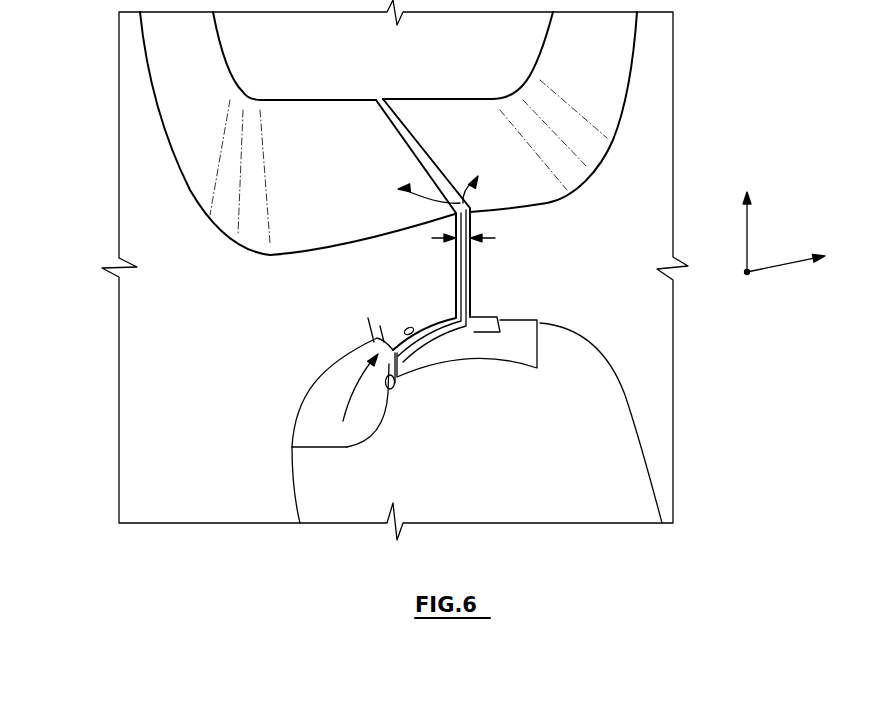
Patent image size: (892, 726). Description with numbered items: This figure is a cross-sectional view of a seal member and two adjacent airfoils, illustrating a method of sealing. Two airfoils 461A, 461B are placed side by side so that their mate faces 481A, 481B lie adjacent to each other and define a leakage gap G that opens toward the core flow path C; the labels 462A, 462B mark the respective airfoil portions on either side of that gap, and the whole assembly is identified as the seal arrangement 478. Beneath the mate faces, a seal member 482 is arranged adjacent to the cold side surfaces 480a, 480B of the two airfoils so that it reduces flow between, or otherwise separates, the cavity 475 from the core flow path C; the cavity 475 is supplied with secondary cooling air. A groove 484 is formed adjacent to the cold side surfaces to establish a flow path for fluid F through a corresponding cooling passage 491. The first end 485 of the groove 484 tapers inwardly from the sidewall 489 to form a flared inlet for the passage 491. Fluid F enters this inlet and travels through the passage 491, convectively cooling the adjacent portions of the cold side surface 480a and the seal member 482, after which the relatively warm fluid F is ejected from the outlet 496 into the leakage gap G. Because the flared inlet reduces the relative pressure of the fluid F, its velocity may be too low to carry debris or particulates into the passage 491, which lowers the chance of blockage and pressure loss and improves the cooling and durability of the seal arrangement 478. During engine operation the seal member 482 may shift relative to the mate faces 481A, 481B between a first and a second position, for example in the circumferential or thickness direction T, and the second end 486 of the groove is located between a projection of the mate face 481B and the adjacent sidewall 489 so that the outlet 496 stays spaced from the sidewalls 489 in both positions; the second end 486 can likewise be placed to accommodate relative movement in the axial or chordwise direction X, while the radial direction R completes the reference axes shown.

The airfoil 461A is at (126, 146).
The airfoil 461B is at (666, 145).
The first airfoil portion 462A is at (298, 301).
The second airfoil portion 462B is at (626, 268).
The seal arrangement 478 is at (158, 246).
The mate face 481A is at (456, 276).
The mate face 481B is at (470, 270).
The outlet 496 is at (456, 317).
The second end 486 is at (482, 318).
The sidewall 489 is at (395, 392).
The cooling passage 491 is at (404, 329).
The groove 484 is at (380, 328).
The seal member 482 is at (452, 352).
The first end 485 is at (384, 420).
The cold side surface 480a is at (321, 381).
The cold side surface 480B is at (568, 330).
The cavity 475 is at (500, 476).
The core flow path C is at (402, 60).
The fluid F is at (466, 193).
The leakage gap G is at (485, 238).
The radial direction R is at (747, 219).
The circumferential or thickness direction T is at (796, 258).
The axial or chordwise direction X is at (745, 274).